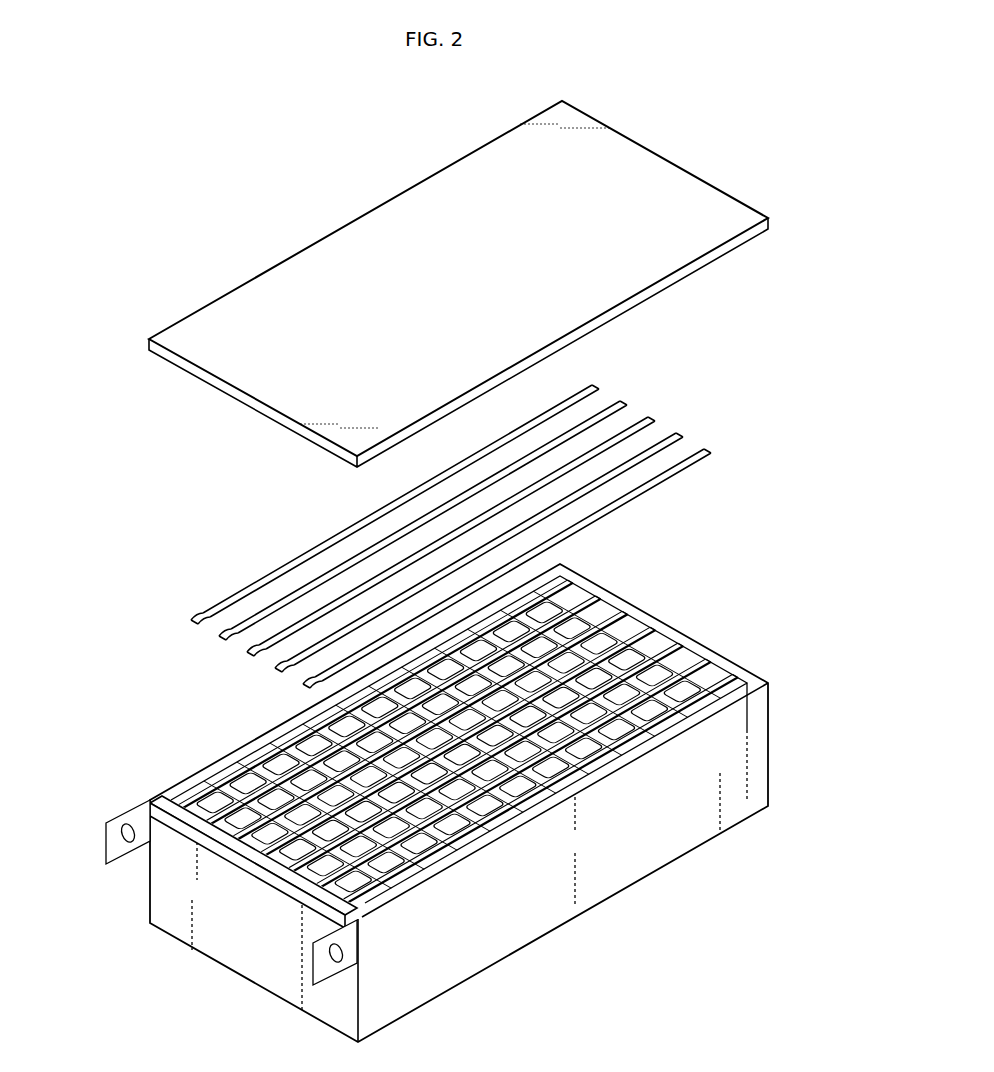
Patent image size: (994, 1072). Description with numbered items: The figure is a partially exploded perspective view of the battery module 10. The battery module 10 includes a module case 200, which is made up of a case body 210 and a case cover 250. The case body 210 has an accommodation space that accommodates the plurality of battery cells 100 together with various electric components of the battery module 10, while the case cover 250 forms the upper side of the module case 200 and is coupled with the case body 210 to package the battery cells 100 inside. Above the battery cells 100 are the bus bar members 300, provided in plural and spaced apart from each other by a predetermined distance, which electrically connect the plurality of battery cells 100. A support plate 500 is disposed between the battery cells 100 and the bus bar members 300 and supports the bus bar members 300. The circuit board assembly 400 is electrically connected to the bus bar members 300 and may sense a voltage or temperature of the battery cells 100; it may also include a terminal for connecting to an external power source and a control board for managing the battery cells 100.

The battery module 10 is at (300, 152).
The battery cell 100 is at (250, 777).
The module case 200 is at (822, 708).
The case body 210 is at (636, 852).
The case cover 250 is at (248, 298).
The bus bar member 300 is at (265, 575).
The circuit board assembly 400 is at (118, 802).
The support plate 500 is at (735, 607).